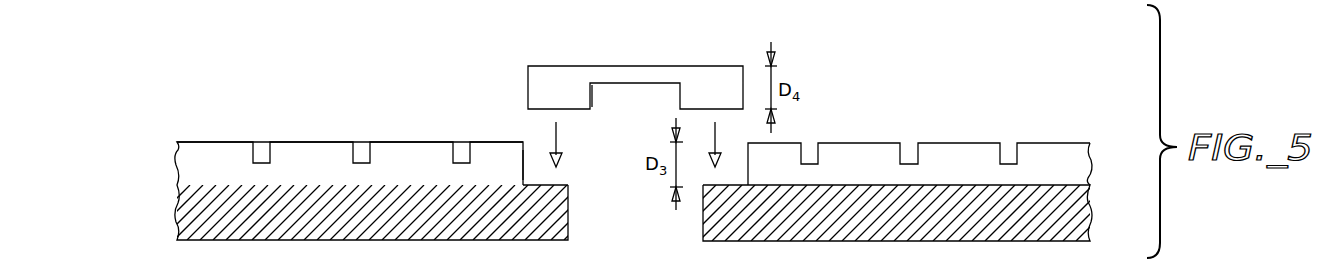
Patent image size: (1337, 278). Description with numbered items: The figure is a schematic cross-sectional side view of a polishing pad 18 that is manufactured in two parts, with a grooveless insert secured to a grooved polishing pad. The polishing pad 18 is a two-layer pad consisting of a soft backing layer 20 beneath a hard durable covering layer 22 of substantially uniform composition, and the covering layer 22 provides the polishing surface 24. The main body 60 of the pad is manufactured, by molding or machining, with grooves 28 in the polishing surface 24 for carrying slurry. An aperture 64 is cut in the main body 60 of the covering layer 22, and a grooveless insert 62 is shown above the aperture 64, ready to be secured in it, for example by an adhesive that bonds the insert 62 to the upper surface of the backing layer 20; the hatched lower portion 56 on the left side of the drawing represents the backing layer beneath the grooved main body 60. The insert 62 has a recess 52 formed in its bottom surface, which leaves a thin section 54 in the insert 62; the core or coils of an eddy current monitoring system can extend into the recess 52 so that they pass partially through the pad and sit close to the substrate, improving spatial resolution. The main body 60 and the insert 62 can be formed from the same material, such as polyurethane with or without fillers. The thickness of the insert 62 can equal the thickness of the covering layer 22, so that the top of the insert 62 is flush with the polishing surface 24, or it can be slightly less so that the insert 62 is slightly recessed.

The polishing pad 18 is at (194, 110).
The backing layer 20 is at (1088, 208).
The covering layer 22 is at (1088, 162).
The polishing surface 24 is at (305, 142).
The grooves 28 is at (908, 150).
The recess 52 is at (592, 95).
The thin section 54 is at (568, 72).
The first substrate 56 is at (570, 210).
The main body 60 is at (1072, 141).
The grooveless insert 62 is at (733, 52).
The aperture 64 is at (525, 155).